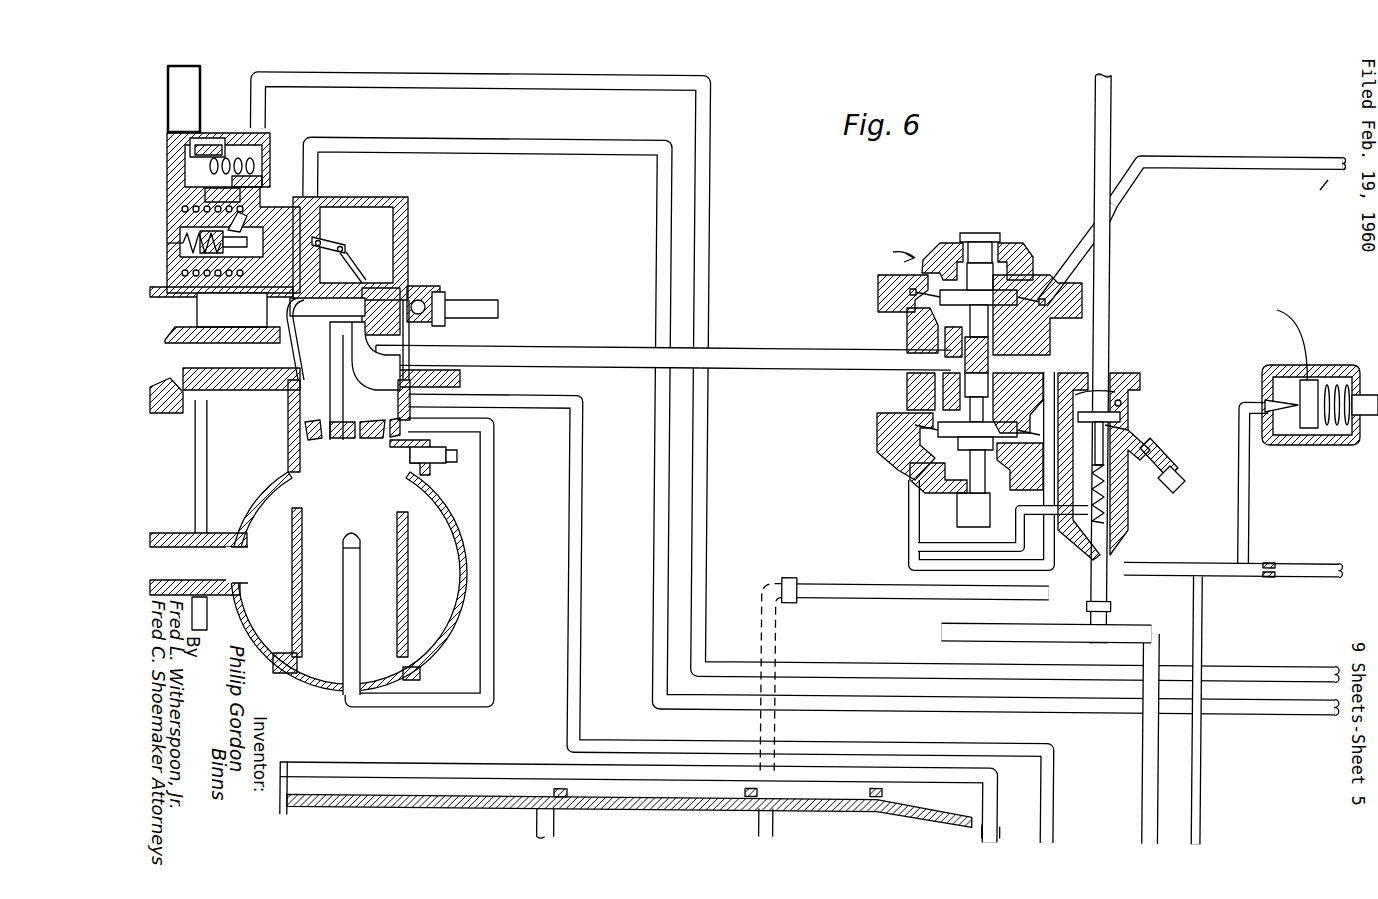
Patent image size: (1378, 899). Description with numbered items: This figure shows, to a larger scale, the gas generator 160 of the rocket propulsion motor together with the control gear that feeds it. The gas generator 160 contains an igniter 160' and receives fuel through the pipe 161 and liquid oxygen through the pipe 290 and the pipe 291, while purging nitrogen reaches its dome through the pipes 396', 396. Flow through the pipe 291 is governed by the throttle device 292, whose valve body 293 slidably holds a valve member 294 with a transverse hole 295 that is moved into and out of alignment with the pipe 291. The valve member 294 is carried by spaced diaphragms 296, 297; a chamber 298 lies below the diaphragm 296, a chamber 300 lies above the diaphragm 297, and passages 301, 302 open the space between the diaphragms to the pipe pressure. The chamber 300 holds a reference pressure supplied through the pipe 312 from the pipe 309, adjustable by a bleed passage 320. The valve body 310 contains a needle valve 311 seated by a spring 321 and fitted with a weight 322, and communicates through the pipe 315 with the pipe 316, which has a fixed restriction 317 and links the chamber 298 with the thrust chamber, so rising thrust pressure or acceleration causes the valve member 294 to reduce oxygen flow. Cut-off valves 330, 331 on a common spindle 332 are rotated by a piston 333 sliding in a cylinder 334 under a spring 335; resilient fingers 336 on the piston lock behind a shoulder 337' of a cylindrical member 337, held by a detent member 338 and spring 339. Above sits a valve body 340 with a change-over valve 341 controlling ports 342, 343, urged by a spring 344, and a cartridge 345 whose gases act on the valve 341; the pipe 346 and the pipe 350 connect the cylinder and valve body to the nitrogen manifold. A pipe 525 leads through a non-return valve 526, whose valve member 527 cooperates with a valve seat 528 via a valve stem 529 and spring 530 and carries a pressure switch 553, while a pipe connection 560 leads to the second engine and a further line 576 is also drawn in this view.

The cartridge 345 is at (277, 174).
The valve body 340 is at (249, 137).
The change-over valve 341 is at (200, 150).
The port 342 is at (238, 196).
The port 343 is at (237, 212).
The spring 344 is at (232, 150).
The shoulder 337' is at (274, 182).
The cylindrical member 337 is at (204, 294).
The detent member 338 is at (240, 250).
The spring 339 is at (240, 240).
The resilient fingers 336 is at (292, 203).
The piston 333 is at (308, 238).
The spring 335 is at (232, 288).
The cylinder 334 is at (230, 340).
The cut-off valve 331 is at (292, 368).
The common spindle 332 is at (317, 310).
The cut-off valve 330 is at (470, 350).
The pipe 291 is at (752, 370).
The pipe 346 is at (538, 150).
The pipe 350 is at (540, 94).
The pipe 396 is at (728, 610).
The pipe 396' is at (640, 788).
The pipe 161 is at (173, 365).
The igniter 160' is at (453, 562).
The gas generator 160 is at (389, 537).
The pipe 290 is at (1112, 140).
The pipe 312 is at (1255, 162).
The throttle device 292 is at (979, 212).
The bleed passage 320 is at (922, 258).
The chamber 300 is at (962, 276).
The diaphragm 297 is at (1060, 274).
The valve body 293 is at (902, 323).
The passage 302 is at (937, 337).
The transverse hole 295 is at (998, 352).
The passage 301 is at (943, 384).
The valve member 294 is at (965, 416).
The diaphragm 296 is at (922, 452).
The chamber 298 is at (952, 485).
The valve member 527 is at (1140, 390).
The non-return valve 526 is at (1157, 419).
The valve seat 528 is at (1140, 424).
The valve stem 529 is at (1143, 448).
The pressure switch 553 is at (1168, 484).
The spring 530 is at (1108, 508).
The needle valve 311 is at (1283, 402).
The spring 321 is at (1340, 386).
The pipe 309 is at (1364, 392).
The weight 322 is at (1307, 430).
The valve body 310 is at (1327, 447).
The pipe 315 is at (1253, 492).
The pipe 316 is at (1218, 560).
The fixed restriction 317 is at (1272, 558).
The pipe connection 560 is at (955, 643).
The pipe 525 is at (1159, 748).
The conduit 576 is at (1202, 779).